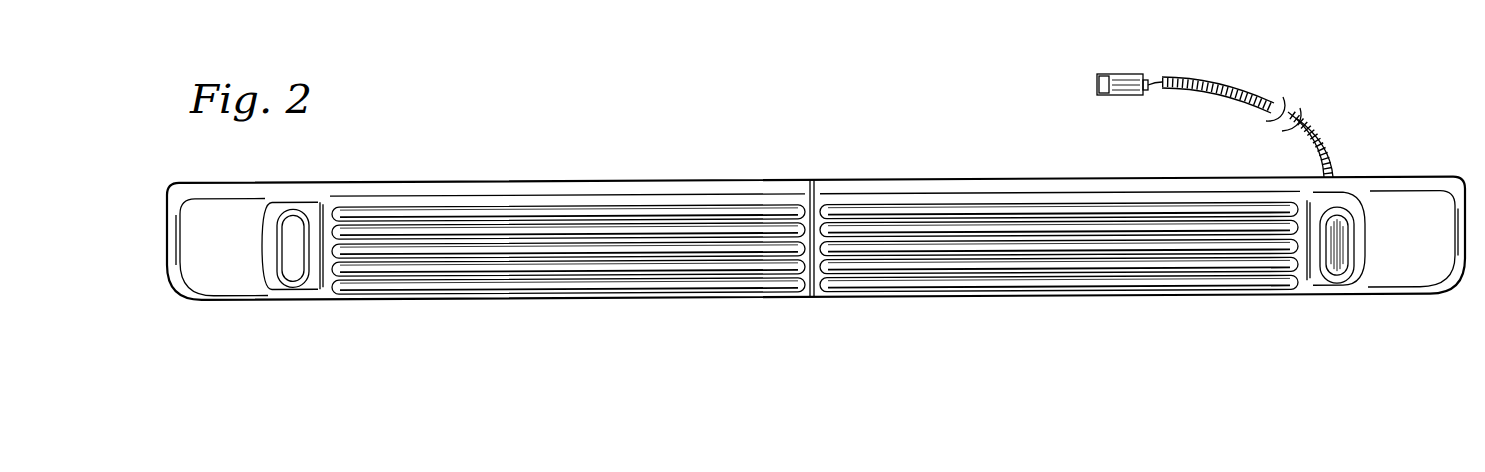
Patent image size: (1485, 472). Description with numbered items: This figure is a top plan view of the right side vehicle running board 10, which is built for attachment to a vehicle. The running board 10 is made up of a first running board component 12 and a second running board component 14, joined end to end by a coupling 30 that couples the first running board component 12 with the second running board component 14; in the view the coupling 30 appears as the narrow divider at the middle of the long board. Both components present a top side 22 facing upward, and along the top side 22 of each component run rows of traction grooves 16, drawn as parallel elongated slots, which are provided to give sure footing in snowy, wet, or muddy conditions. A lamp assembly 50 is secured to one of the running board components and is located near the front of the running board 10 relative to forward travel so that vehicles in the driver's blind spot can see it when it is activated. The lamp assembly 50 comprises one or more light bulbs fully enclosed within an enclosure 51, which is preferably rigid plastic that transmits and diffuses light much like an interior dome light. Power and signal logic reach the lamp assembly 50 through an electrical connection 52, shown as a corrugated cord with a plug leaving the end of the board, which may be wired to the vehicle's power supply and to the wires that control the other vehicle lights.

The vehicle running board 10 is at (636, 128).
The first running board component 12 is at (477, 300).
The second running board component 14 is at (1058, 298).
The traction grooves 16 is at (782, 213).
The top side 22 is at (515, 231).
The coupling 30 is at (811, 300).
The lamp assembly 50 is at (1346, 211).
The enclosure 51 is at (1389, 265).
The electrical connection 52 is at (1237, 85).